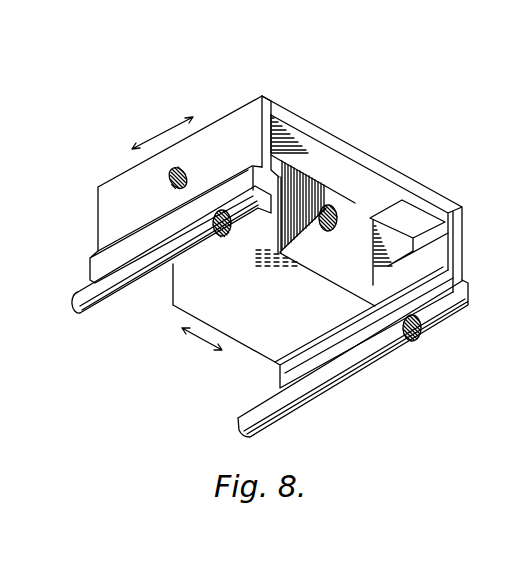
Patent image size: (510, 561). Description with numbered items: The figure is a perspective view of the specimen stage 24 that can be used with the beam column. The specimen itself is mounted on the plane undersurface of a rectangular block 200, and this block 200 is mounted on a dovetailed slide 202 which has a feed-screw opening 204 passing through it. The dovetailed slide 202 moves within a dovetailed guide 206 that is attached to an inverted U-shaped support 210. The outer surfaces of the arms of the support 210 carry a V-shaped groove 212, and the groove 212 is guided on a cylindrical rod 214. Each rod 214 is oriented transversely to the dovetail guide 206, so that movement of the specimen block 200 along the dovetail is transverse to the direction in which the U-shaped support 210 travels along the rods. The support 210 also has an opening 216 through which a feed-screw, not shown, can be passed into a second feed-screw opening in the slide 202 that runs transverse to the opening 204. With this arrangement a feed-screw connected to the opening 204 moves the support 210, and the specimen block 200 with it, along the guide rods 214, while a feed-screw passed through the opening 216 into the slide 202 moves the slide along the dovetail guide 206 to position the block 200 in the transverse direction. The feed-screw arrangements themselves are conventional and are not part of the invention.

The specimen stage 24 is at (308, 103).
The rectangular block 200 is at (290, 324).
The dovetailed slide 202 is at (412, 199).
The feed-screw opening 204 is at (330, 208).
The dovetailed guide 206 is at (317, 178).
The inverted U-shaped support 210 is at (220, 133).
The V-shaped groove 212 is at (443, 314).
The cylindrical rod 214 is at (100, 295).
The opening 216 is at (169, 183).